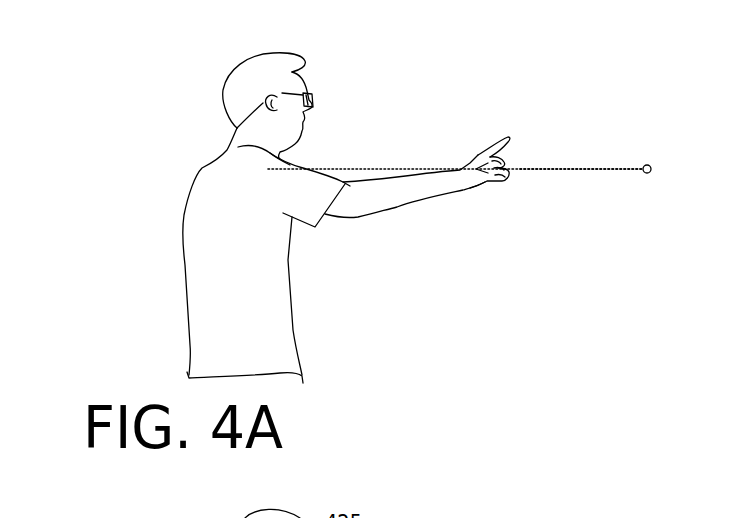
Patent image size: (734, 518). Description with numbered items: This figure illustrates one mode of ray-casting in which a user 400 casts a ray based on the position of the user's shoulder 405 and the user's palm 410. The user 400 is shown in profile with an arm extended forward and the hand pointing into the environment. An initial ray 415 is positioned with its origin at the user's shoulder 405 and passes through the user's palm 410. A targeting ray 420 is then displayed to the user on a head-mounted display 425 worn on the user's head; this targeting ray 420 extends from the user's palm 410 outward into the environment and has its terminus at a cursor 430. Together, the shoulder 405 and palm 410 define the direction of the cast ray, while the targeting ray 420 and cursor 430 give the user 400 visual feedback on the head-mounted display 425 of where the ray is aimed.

The user 400 is at (262, 341).
The shoulder 405 is at (297, 196).
The palm 410 is at (485, 183).
The initial ray 415 is at (422, 168).
The targeting ray 420 is at (623, 168).
The head-mounted display 425 is at (313, 95).
The cursor 430 is at (650, 165).